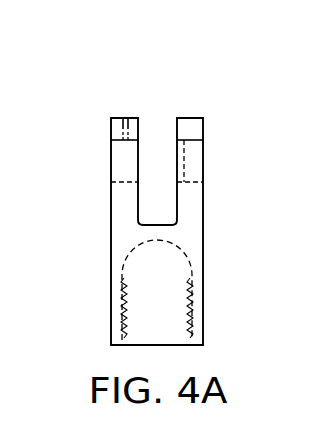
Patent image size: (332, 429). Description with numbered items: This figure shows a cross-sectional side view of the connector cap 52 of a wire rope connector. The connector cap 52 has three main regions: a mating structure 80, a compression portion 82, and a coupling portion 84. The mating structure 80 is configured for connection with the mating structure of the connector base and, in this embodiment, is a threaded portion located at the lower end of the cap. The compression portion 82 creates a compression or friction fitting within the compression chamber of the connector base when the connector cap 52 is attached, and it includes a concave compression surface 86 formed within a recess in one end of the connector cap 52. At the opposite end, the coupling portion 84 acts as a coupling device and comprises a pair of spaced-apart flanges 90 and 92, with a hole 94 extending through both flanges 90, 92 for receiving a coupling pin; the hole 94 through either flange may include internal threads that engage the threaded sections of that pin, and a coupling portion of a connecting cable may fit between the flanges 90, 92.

The connector cap 52 is at (96, 70).
The mating structure 80 is at (136, 298).
The compression portion 82 is at (203, 243).
The coupling portion 84 is at (203, 200).
The concave compression surface 86 is at (130, 253).
The flange 90 is at (203, 127).
The flange 92 is at (112, 130).
The hole 94 is at (117, 182).